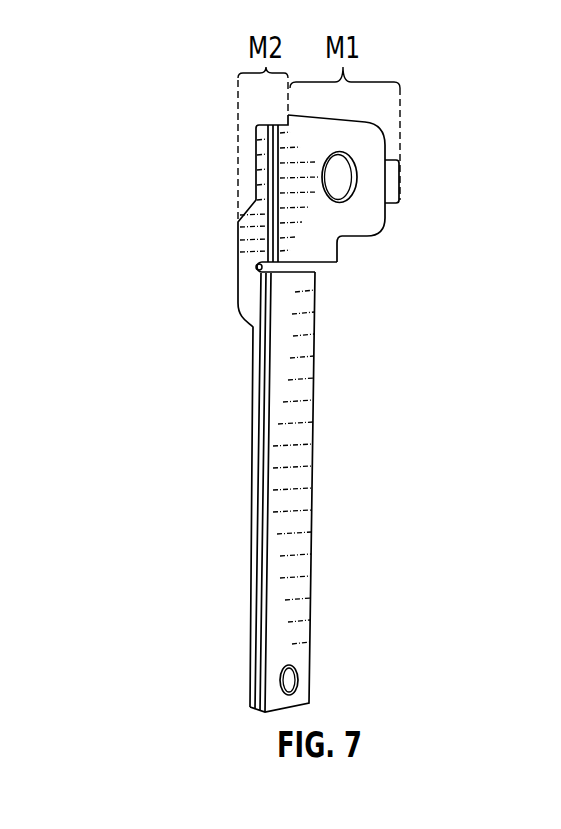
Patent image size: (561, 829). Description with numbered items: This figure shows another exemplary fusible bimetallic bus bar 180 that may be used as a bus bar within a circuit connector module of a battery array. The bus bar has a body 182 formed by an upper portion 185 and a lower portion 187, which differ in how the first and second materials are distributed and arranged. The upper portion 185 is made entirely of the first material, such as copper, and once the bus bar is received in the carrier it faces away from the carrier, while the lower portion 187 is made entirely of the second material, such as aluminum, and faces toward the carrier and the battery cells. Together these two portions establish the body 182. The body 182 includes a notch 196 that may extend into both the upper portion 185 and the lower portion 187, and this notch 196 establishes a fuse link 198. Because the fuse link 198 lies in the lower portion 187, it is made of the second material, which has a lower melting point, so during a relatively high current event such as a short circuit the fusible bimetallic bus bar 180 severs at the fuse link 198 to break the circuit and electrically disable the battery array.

The fusible bimetallic bus bar 180 is at (428, 185).
The body 182 is at (324, 490).
The upper portion 185 is at (310, 568).
The lower portion 187 is at (252, 470).
The notch 196 is at (298, 268).
The fuse link 198 is at (252, 269).